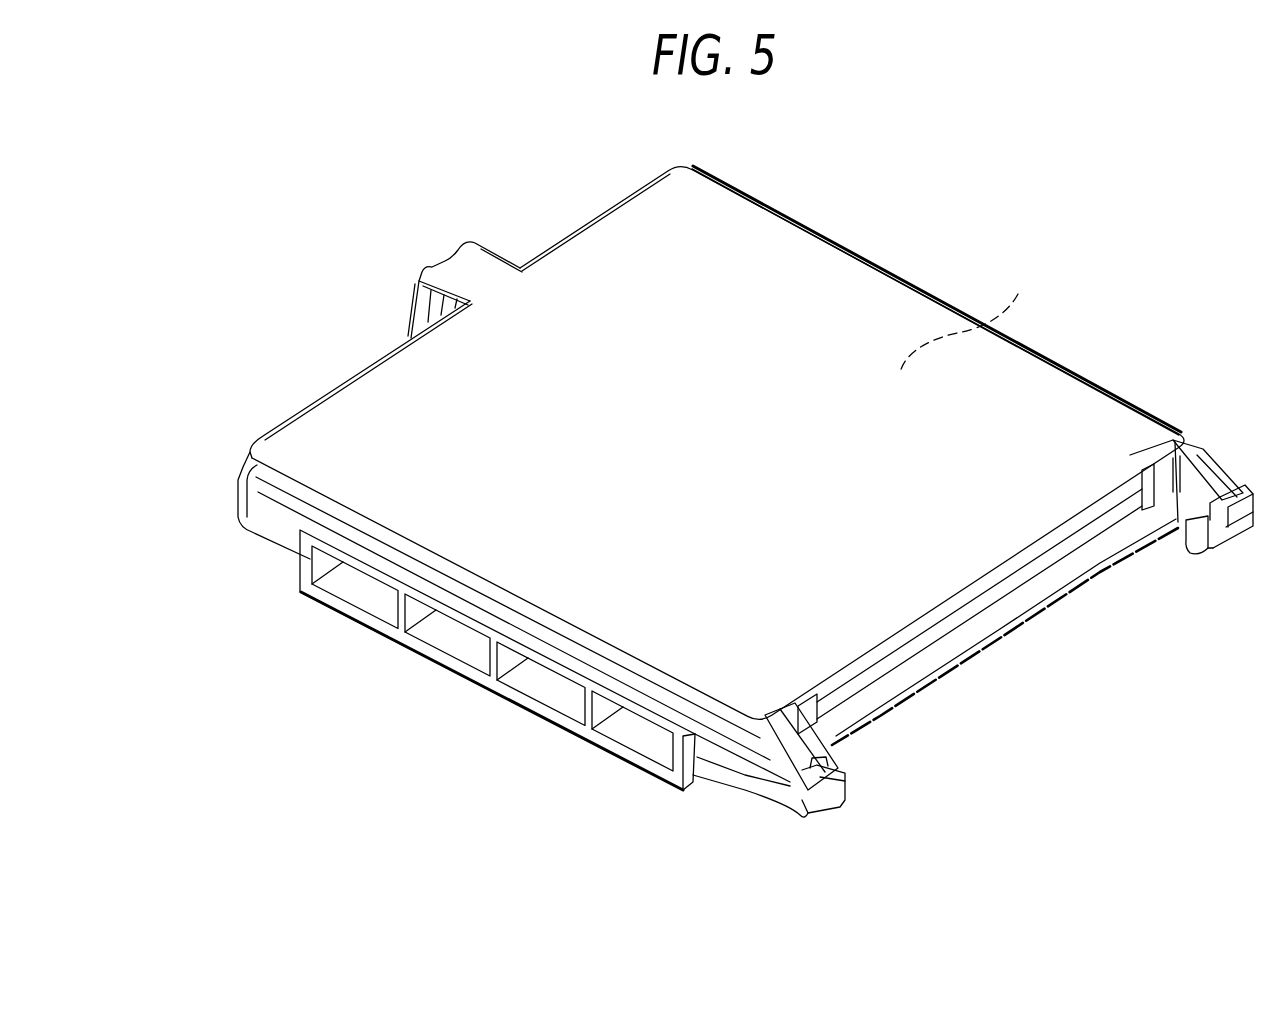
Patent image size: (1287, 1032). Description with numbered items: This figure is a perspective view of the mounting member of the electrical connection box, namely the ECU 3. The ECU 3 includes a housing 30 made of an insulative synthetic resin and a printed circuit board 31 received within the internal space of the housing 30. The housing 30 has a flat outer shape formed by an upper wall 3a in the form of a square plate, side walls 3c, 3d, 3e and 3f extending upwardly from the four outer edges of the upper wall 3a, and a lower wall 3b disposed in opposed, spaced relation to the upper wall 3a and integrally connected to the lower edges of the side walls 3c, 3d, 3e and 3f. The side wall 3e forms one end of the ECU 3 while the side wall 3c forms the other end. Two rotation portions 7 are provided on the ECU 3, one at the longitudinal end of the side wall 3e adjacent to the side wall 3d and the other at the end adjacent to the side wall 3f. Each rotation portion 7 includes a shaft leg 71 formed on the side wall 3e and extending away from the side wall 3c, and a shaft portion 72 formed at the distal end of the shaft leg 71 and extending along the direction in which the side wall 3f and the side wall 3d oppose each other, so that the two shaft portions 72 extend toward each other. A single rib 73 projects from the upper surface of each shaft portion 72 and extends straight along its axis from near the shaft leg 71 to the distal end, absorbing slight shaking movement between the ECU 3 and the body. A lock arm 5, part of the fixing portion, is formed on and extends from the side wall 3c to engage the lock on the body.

The ECU 3 is at (864, 190).
The upper wall 3a is at (723, 222).
The lower wall 3b is at (703, 790).
The side wall 3c is at (340, 383).
The side wall 3d is at (270, 518).
The side wall 3e is at (963, 643).
The side wall 3f is at (1057, 367).
The housing 30 is at (917, 290).
The printed circuit board 31 is at (1010, 306).
The lock arm 5 is at (492, 234).
The rotation portion 7 is at (788, 834).
The shaft leg 71 is at (790, 770).
The shaft portion 72 is at (822, 762).
The rib 73 is at (829, 754).